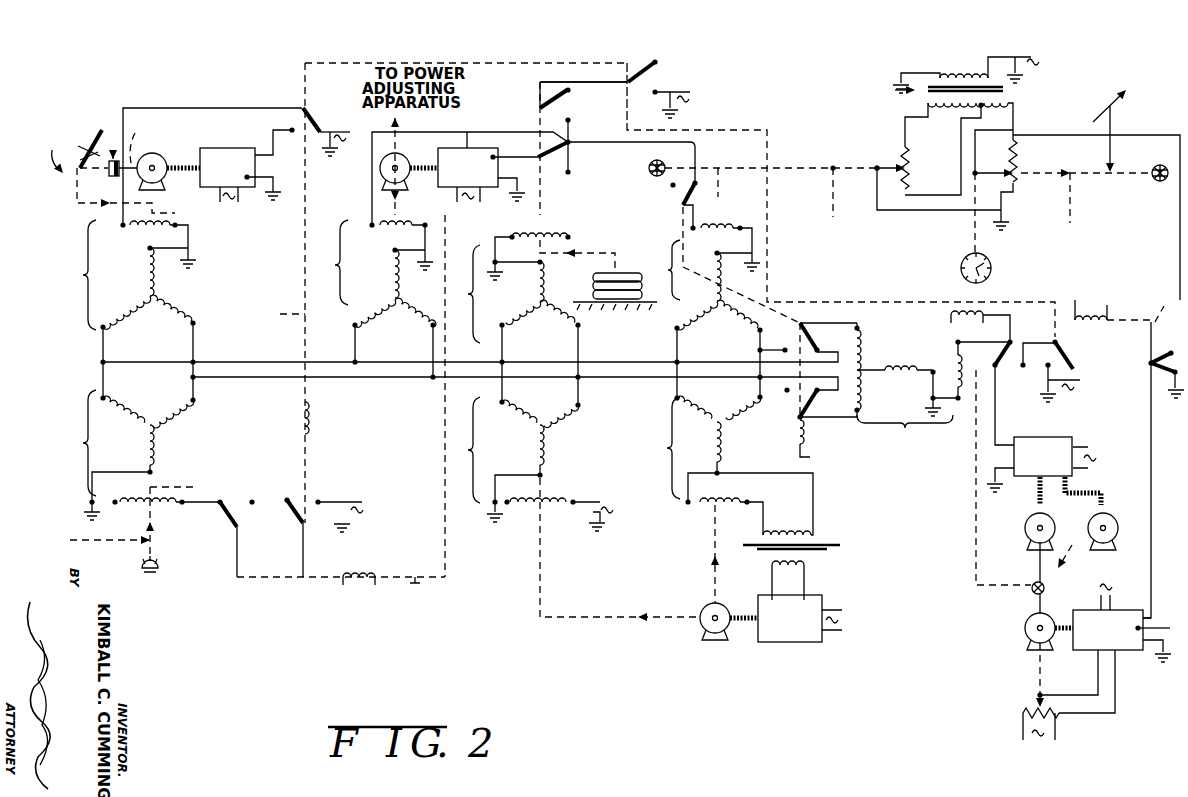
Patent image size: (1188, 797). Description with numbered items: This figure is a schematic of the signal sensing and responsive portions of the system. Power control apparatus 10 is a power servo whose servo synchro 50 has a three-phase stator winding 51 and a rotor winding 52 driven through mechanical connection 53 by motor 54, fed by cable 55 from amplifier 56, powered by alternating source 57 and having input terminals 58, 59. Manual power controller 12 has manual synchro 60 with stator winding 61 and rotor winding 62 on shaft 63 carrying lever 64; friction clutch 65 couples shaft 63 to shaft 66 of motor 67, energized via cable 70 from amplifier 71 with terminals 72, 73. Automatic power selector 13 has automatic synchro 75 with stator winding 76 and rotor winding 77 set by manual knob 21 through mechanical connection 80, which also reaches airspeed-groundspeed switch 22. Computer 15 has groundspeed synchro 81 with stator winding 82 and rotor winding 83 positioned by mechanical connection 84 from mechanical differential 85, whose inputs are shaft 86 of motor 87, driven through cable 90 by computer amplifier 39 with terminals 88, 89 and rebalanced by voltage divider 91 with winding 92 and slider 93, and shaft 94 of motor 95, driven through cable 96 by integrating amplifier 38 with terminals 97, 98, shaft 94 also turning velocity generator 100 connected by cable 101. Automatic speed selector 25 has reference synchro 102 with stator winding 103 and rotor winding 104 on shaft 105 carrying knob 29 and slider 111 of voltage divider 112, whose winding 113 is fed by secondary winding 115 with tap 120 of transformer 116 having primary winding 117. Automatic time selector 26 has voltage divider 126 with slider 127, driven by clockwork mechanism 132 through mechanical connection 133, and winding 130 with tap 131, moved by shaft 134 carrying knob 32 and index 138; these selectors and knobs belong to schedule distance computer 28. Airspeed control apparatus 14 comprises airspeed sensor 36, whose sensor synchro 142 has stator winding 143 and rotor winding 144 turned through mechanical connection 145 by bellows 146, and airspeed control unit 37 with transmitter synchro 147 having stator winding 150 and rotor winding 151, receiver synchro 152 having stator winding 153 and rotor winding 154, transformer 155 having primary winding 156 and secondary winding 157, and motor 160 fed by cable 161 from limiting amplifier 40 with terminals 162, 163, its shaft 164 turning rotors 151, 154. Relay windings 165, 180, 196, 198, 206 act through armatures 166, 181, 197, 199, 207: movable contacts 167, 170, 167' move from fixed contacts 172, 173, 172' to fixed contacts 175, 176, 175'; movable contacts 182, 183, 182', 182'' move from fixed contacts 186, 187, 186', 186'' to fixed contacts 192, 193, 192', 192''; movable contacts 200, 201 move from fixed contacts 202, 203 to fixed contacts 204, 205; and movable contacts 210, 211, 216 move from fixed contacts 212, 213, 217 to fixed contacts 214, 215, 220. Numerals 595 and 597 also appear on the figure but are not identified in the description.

The power control apparatus 10 is at (365, 218).
The manual power controller 12 is at (49, 154).
The automatic power selector 13 is at (64, 468).
The airspeed control apparatus 14 is at (632, 447).
The computer 15 is at (955, 465).
The manual knob 21 is at (158, 574).
The airspeed-groundspeed switch 22 is at (235, 479).
The automatic speed selector 25 is at (795, 148).
The automatic time selector 26 is at (1067, 130).
The schedule distance computer 28 is at (1082, 212).
The manual operating knob 29 is at (650, 173).
The manual operating knob 32 is at (1158, 164).
The airspeed sensing unit 36 is at (593, 334).
The airspeed control unit 37 is at (634, 532).
The integrating amplifier 38 is at (1035, 439).
The computer amplifier 39 is at (1086, 611).
The limiting amplifier 40 is at (766, 644).
The servo synchro 50 is at (331, 262).
The three-phase stator winding 51 is at (393, 286).
The single-phase rotor winding 52 is at (394, 230).
The mechanical connection 53 is at (396, 199).
The motor 54 is at (400, 159).
The cable 55 is at (422, 173).
The amplifier 56 is at (467, 145).
The source of alternating voltage 57 is at (364, 123).
The input terminal 58 is at (499, 157).
The input terminal 59 is at (500, 177).
The manual synchro 60 is at (77, 275).
The three-phase stator winding 61 is at (144, 291).
The single-phase rotor winding 62 is at (143, 231).
The shaft 63 is at (138, 194).
The manual operating lever 64 is at (98, 133).
The friction clutch 65 is at (112, 176).
The shaft 66 is at (145, 140).
The motor 67 is at (160, 153).
The cable 70 is at (183, 170).
The amplifier 71 is at (221, 148).
The input terminal 72 is at (253, 152).
The input terminal 73 is at (248, 185).
The automatic synchro 75 is at (75, 443).
The three-phase stator winding 76 is at (151, 411).
The single-phase rotor winding 77 is at (162, 508).
The mechanical connection 80 is at (157, 545).
The groundspeed synchro 81 is at (905, 431).
The three-phase stator winding 82 is at (893, 370).
The single-phase rotor winding 83 is at (946, 359).
The mechanical connection 84 is at (975, 480).
The mechanical differential 85 is at (1032, 591).
The shaft 86 is at (1037, 669).
The motor 87 is at (1025, 633).
The input terminal 88 is at (1148, 617).
The input terminal 89 is at (1149, 657).
The cable 90 is at (1065, 653).
The voltage divider 91 is at (1013, 719).
The winding 92 is at (1057, 730).
The slider 93 is at (1037, 697).
The shaft 94 is at (1058, 565).
The motor 95 is at (1023, 538).
The cable 96 is at (1034, 505).
The input terminal 97 is at (1016, 430).
The input terminal 98 is at (1005, 485).
The velocity generator 100 is at (1109, 528).
The cable 101 is at (1095, 495).
The reference synchro 102 is at (661, 266).
The three-phase stator winding 103 is at (714, 300).
The single-phase rotor winding 104 is at (729, 226).
The shaft 105 is at (820, 189).
The slider 111 is at (877, 188).
The voltage divider 112 is at (909, 178).
The winding 113 is at (907, 164).
The secondary winding 115 is at (928, 104).
The transformer 116 is at (932, 92).
The primary winding 117 is at (940, 74).
The tap 120 is at (979, 108).
The voltage divider 126 is at (1020, 162).
The slider 127 is at (987, 169).
The winding 130 is at (1019, 195).
The tap 131 is at (1008, 190).
The clockwork mechanism 132 is at (988, 267).
The mechanical connection 133 is at (970, 233).
The shaft 134 is at (1078, 198).
The index 138 is at (1123, 97).
The sensor synchro 142 is at (463, 294).
The three-phase stator winding 143 is at (532, 287).
The single-phase rotor winding 144 is at (510, 234).
The mechanical connection 145 is at (574, 254).
The airspeed responsive device 146 is at (614, 275).
The transmitter synchro 147 is at (462, 450).
The three-phase stator winding 150 is at (543, 426).
The single-phase rotor winding 151 is at (546, 502).
The receiver synchro 152 is at (658, 448).
The three-phase stator winding 153 is at (715, 431).
The single-phase rotor winding 154 is at (703, 507).
The transformer 155 is at (832, 540).
The primary winding 156 is at (791, 532).
The secondary winding 157 is at (806, 561).
The motor 160 is at (715, 642).
The cable 161 is at (740, 610).
The input terminal 162 is at (774, 600).
The input terminal 163 is at (808, 595).
The shaft 164 is at (574, 616).
The relay winding 165 is at (355, 581).
The armature 166 is at (417, 584).
The movable contact 167 is at (341, 552).
The movable contact 167' is at (565, 79).
The movable contact 170 is at (558, 170).
The fixed contact 172 is at (216, 525).
The fixed contact 172' is at (580, 94).
The fixed contact 173 is at (568, 147).
The fixed contact 175 is at (267, 513).
The fixed contact 175' is at (593, 140).
The fixed contact 176 is at (571, 175).
The relay winding 180 is at (311, 419).
The armature 181 is at (276, 317).
The movable contact 182 is at (294, 538).
The movable contact 182' is at (667, 75).
The movable contact 182'' is at (1089, 335).
The movable contact 183 is at (312, 110).
The fixed contact 186 is at (278, 484).
The fixed contact 186' is at (679, 60).
The fixed contact 186'' is at (1094, 356).
The fixed contact 187 is at (345, 130).
The fixed contact 192 is at (338, 485).
The fixed contact 192' is at (659, 104).
The fixed contact 192'' is at (1024, 385).
The fixed contact 193 is at (293, 142).
The relay winding 196 is at (1075, 300).
The armature 197 is at (1159, 306).
The relay winding 198 is at (948, 315).
The armature 199 is at (1010, 336).
The movable contact 200 is at (1148, 371).
The movable contact 201 is at (1055, 343).
The fixed contact 202 is at (1168, 382).
The fixed contact 203 is at (993, 366).
The fixed contact 204 is at (1169, 353).
The fixed contact 205 is at (1023, 367).
The relay winding 206 is at (810, 446).
The armature 207 is at (790, 412).
The movable contact 210 is at (808, 416).
The movable contact 211 is at (818, 350).
The fixed contact 212 is at (824, 396).
The fixed contact 213 is at (838, 355).
The fixed contact 214 is at (785, 392).
The fixed contact 215 is at (778, 338).
The movable contact 216 is at (680, 205).
The fixed contact 217 is at (697, 163).
The fixed contact 220 is at (671, 188).
The motor lead 595 is at (1110, 538).
The amplifier terminal 597 is at (1148, 626).